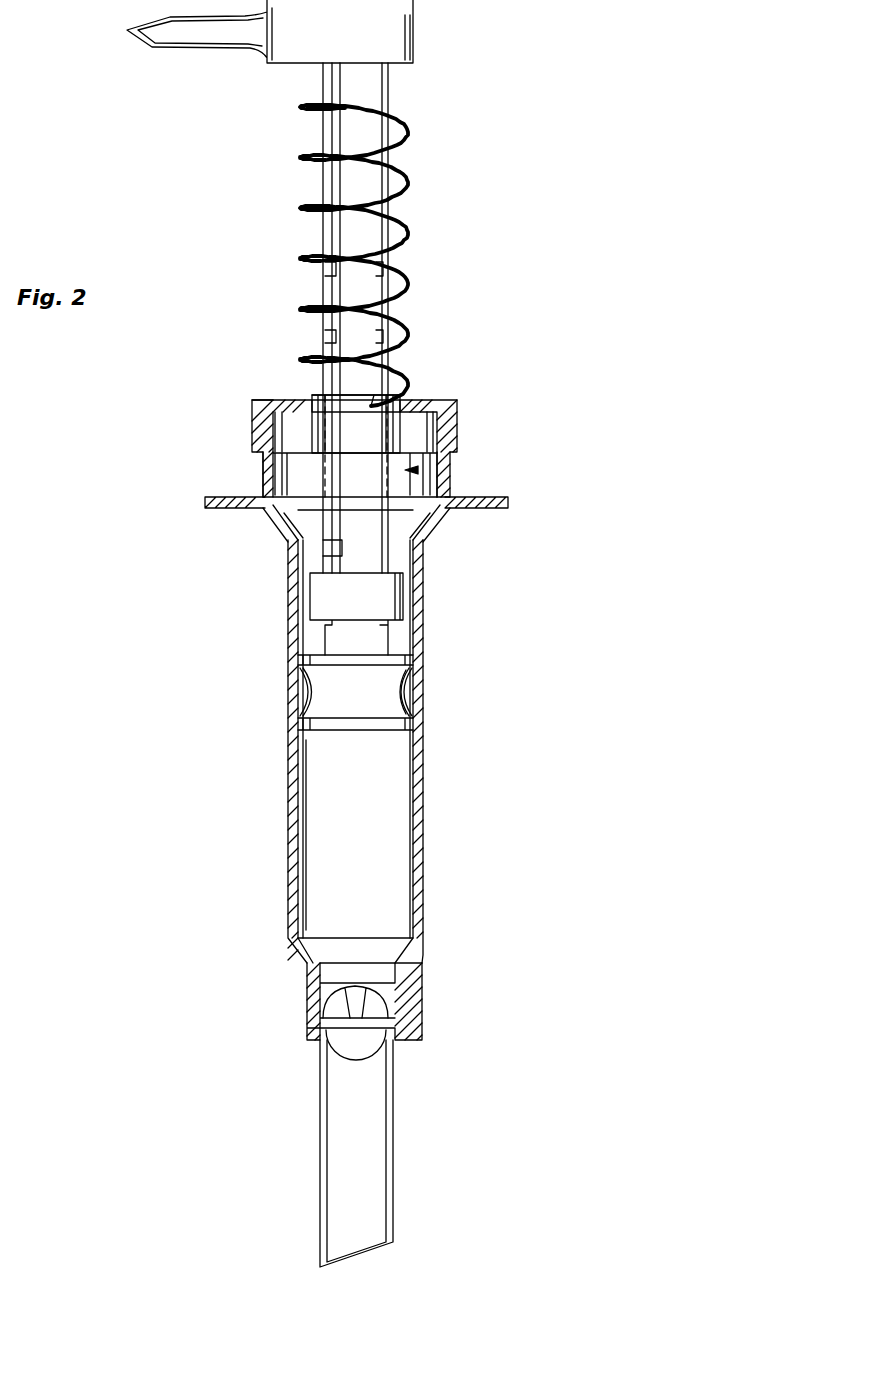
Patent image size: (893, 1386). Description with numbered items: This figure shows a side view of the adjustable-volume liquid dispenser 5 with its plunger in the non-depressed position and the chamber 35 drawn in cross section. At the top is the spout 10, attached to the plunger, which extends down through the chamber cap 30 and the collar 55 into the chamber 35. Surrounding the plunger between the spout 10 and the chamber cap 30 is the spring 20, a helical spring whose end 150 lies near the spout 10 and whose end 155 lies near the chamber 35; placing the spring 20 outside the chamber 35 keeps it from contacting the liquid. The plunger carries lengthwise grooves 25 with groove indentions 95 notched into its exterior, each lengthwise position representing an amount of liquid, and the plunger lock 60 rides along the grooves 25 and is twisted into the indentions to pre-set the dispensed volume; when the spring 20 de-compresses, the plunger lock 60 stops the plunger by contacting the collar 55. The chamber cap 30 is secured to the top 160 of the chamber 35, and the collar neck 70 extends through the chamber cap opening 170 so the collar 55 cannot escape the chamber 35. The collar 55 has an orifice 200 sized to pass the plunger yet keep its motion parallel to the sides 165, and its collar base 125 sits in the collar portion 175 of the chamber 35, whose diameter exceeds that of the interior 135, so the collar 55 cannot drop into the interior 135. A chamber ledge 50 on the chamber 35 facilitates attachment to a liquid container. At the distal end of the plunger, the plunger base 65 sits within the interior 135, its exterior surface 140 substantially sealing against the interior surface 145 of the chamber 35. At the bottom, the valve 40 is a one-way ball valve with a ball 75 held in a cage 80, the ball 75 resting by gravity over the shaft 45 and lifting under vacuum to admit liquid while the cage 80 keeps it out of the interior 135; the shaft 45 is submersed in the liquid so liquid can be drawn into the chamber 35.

The adjustable-volume liquid dispenser 5 is at (544, 300).
The spout 10 is at (413, 38).
The spring 20 is at (395, 182).
The grooves 25 is at (330, 133).
The chamber cap 30 is at (440, 400).
The chamber 35 is at (423, 822).
The valve 40 is at (425, 986).
The shaft 45 is at (393, 1138).
The chamber ledge 50 is at (205, 503).
The collar 55 is at (412, 470).
The plunger lock 60 is at (400, 598).
The plunger base 65 is at (330, 690).
The collar neck 70 is at (372, 424).
The ball 75 is at (356, 1045).
The cage 80 is at (330, 975).
The groove indentions 95 is at (333, 268).
The collar base 125 is at (305, 482).
The interior 135 is at (398, 872).
The exterior surface 140 is at (418, 690).
The interior surface 145 is at (315, 848).
The end 150 is at (350, 97).
The end 155 is at (372, 392).
The top 160 is at (265, 468).
The sides 165 is at (423, 770).
The chamber cap opening 170 is at (310, 395).
The collar portion 175 is at (442, 492).
The orifice 200 is at (268, 400).